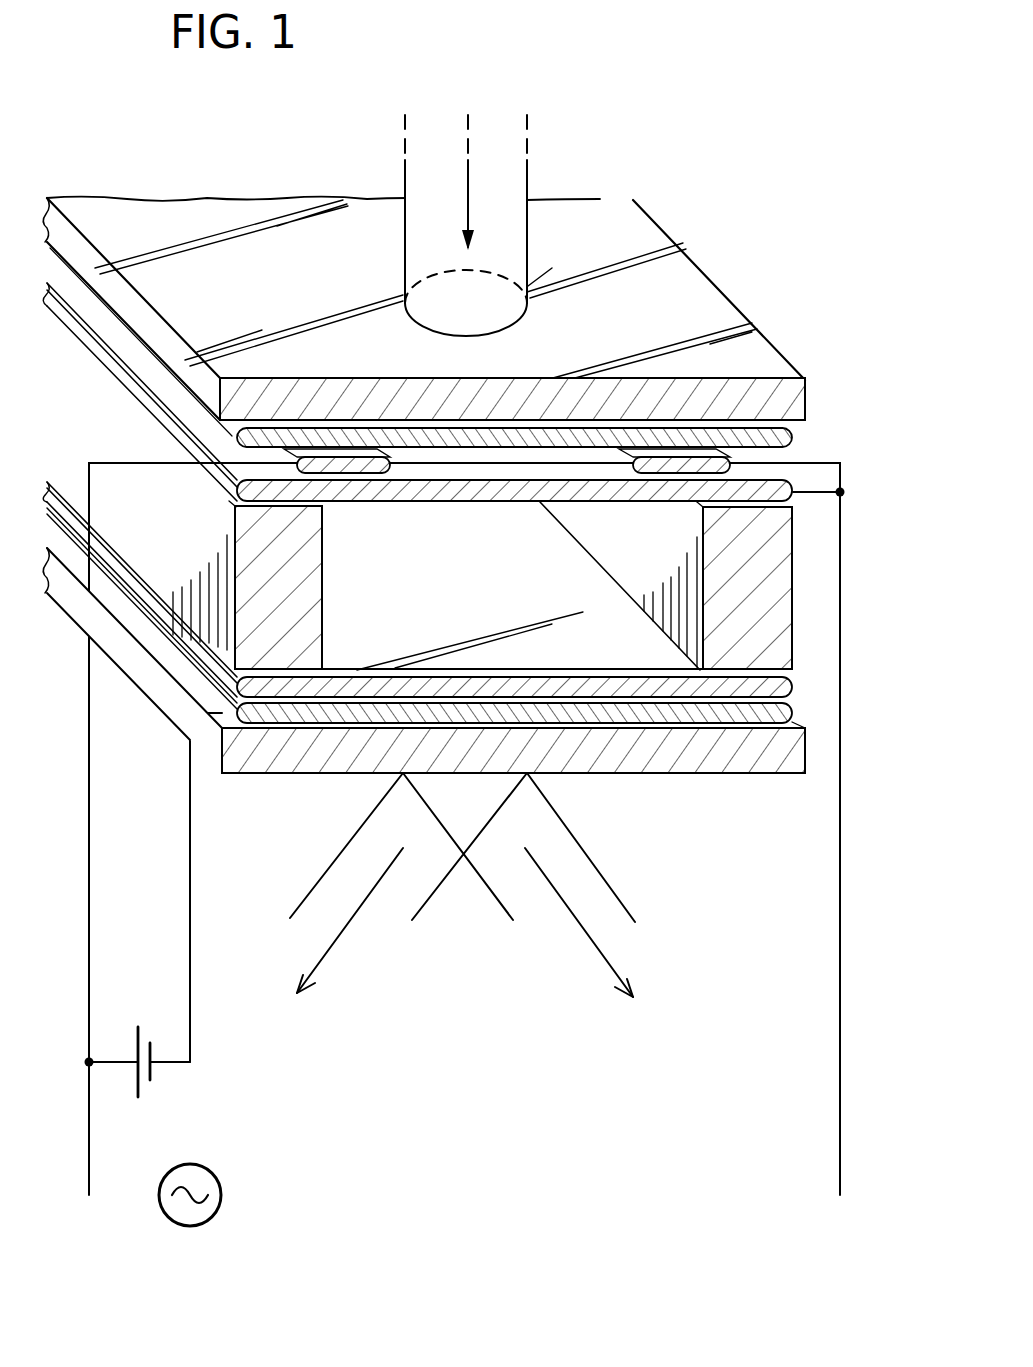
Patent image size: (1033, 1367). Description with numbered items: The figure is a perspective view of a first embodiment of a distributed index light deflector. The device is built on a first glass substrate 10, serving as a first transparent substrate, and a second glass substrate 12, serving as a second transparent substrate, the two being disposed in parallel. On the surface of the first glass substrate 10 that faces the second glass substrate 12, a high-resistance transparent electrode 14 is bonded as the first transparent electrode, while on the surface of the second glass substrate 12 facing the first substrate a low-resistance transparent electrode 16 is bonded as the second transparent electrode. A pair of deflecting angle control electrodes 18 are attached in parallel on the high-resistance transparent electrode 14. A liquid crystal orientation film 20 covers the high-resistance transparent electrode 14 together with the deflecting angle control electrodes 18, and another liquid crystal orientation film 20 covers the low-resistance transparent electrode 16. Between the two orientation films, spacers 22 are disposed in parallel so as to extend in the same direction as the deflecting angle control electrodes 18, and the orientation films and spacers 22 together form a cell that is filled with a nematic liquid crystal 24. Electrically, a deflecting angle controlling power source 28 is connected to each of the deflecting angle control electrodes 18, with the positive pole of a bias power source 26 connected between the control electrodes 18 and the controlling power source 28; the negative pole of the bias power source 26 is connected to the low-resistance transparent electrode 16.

The first glass substrate 10 is at (807, 407).
The second glass substrate 12 is at (757, 760).
The high-resistance transparent electrode 14 is at (792, 438).
The low-resistance transparent electrode 16 is at (793, 713).
The deflecting angle control electrodes 18 is at (343, 467).
The liquid crystal orientation film 20 is at (420, 502).
The spacers 22 is at (323, 572).
The nematic liquid crystal 24 is at (485, 612).
The bias power source 26 is at (153, 1075).
The deflecting angle controlling power source 28 is at (217, 1177).